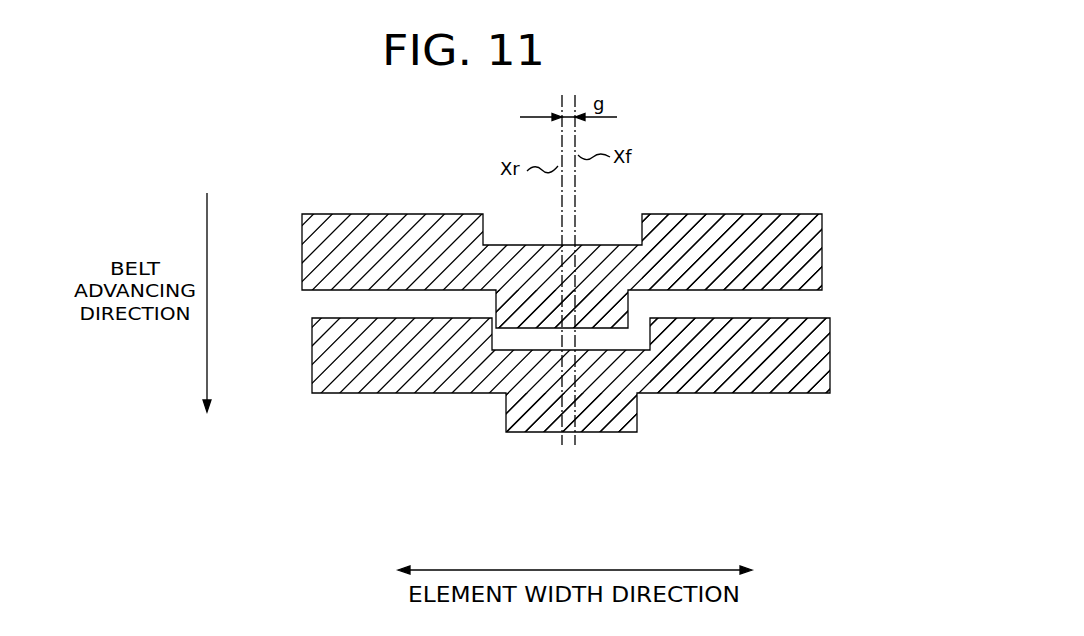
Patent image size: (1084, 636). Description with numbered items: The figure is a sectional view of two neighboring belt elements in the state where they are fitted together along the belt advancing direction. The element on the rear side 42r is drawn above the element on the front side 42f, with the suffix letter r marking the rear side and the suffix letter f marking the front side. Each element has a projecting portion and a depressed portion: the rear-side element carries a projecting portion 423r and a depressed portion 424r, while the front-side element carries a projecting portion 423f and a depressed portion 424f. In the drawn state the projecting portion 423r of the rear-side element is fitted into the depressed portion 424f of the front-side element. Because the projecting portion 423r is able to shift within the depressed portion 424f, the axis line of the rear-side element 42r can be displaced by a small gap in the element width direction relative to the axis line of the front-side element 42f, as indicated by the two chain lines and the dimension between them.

The element on the rear side 42r is at (357, 204).
The element on the front side 42f is at (330, 401).
The depressed portion of the element on the rear side 424r is at (620, 223).
The depressed portion of the element on the front side 424f is at (640, 326).
The projecting portion of the element on the rear side 423r is at (504, 324).
The projecting portion of the element on the front side 423f is at (532, 424).